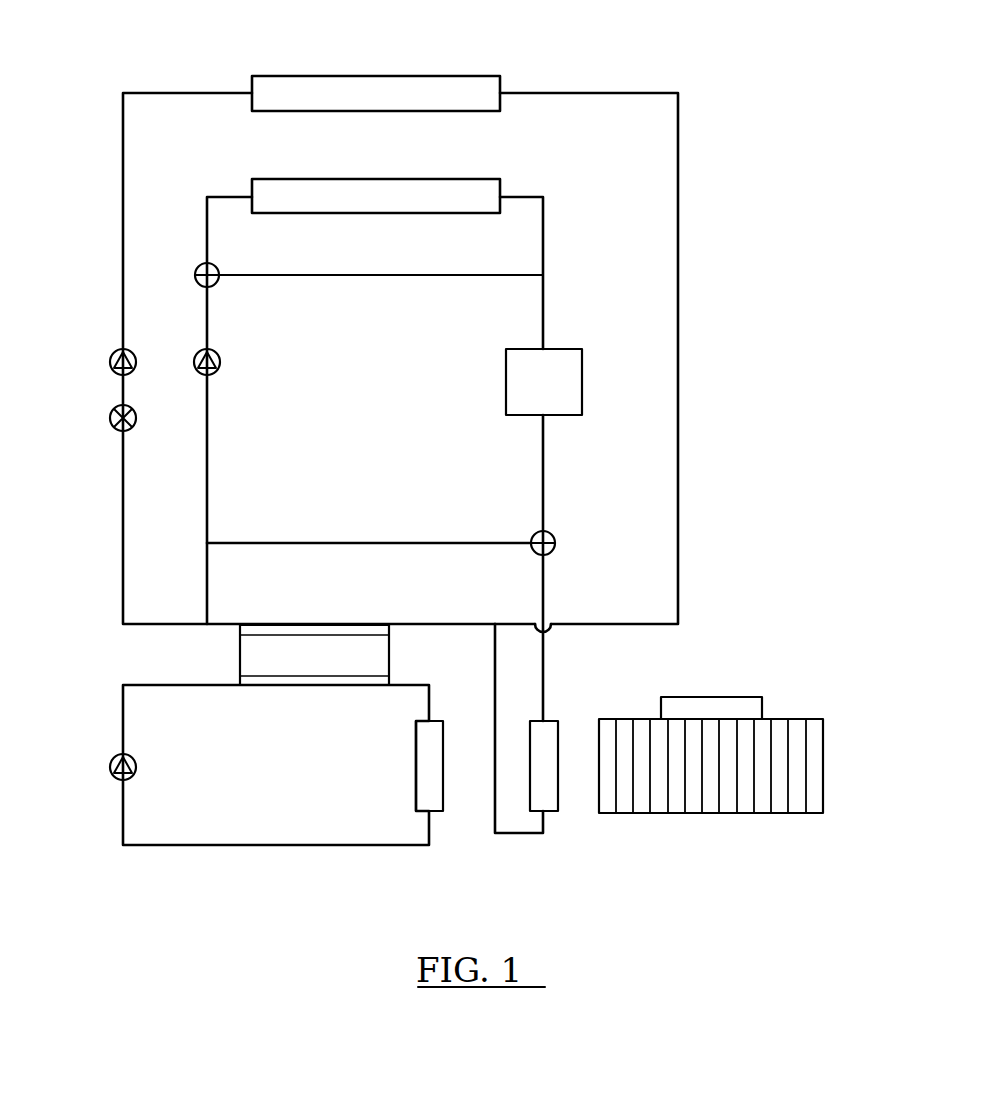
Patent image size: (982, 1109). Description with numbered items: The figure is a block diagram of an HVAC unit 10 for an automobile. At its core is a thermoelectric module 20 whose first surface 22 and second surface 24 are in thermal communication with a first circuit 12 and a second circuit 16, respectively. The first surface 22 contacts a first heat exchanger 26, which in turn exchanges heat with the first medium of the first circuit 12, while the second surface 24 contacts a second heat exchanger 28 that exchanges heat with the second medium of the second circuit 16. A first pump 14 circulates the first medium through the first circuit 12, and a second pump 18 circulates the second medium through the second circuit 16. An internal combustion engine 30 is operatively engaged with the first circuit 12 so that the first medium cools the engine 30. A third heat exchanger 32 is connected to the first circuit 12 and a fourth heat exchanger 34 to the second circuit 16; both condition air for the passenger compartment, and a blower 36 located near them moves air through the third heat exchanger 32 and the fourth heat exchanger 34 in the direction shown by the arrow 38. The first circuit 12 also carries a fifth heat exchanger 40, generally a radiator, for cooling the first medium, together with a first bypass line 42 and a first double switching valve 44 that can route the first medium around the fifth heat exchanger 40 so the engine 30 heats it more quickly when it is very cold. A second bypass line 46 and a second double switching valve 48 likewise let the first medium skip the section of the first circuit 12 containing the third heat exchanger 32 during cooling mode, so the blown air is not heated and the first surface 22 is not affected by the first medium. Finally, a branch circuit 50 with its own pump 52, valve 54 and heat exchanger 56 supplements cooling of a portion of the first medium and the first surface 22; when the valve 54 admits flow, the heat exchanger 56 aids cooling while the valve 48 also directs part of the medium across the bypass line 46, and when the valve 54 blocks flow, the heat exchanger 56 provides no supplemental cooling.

The HVAC unit 10 is at (703, 43).
The first circuit 12 is at (209, 462).
The first pump 14 is at (220, 358).
The second circuit 16 is at (123, 705).
The second pump 18 is at (110, 768).
The thermoelectric module 20 is at (240, 660).
The first surface 22 is at (348, 632).
The second surface 24 is at (350, 680).
The first heat exchanger 26 is at (285, 632).
The second heat exchanger 28 is at (292, 681).
The internal combustion engine 30 is at (582, 376).
The third heat exchanger 32 is at (560, 735).
The fourth heat exchanger 34 is at (413, 795).
The blower 36 is at (762, 710).
The arrow 38 is at (565, 766).
The fifth heat exchanger 40 is at (423, 180).
The first bypass line 42 is at (397, 276).
The first double switching valve 44 is at (196, 268).
The second bypass line 46 is at (343, 543).
The second double switching valve 48 is at (553, 535).
The branch circuit 50 is at (123, 290).
The pump 52 is at (110, 360).
The valve 54 is at (110, 420).
The heat exchanger 56 is at (331, 76).